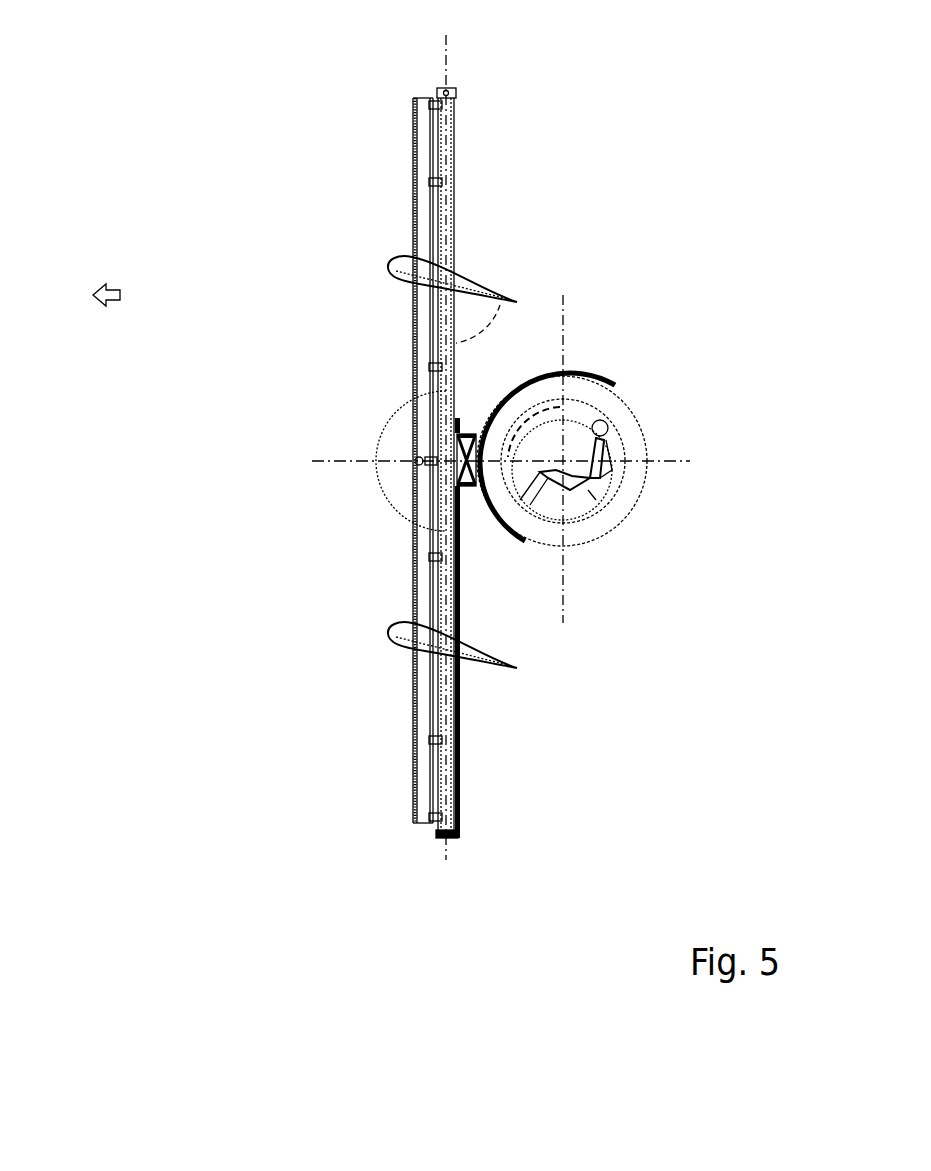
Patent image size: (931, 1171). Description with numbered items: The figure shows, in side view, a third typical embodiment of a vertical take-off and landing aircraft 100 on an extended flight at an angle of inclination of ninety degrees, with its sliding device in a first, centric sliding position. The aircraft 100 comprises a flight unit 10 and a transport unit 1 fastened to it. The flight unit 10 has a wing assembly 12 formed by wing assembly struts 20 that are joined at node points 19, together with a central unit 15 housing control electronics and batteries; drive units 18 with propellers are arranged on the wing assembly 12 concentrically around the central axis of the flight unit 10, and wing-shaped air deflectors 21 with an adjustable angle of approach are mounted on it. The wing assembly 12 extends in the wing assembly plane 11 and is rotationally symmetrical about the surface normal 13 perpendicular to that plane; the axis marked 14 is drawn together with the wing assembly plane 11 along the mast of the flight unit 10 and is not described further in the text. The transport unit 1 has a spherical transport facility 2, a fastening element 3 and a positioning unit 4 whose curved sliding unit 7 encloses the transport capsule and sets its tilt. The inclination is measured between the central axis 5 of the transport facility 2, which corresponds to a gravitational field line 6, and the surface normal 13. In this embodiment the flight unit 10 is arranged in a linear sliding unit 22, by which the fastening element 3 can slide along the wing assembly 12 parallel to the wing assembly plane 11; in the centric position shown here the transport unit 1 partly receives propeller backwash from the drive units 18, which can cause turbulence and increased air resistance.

The transport unit 1 is at (619, 489).
The transport facility 2 is at (627, 515).
The fastening element 3 is at (484, 518).
The positioning unit 4 is at (462, 488).
The central axis 5 is at (618, 494).
The gravitational field line 6 is at (567, 615).
The curved sliding unit 7 is at (577, 366).
The flight unit 10 is at (330, 648).
The wing assembly plane 11 is at (525, 442).
The rotation axis of mast 14 is at (445, 62).
The wing assembly 12 is at (498, 468).
The wing assembly struts 20 is at (454, 145).
The surface normal 13 is at (351, 463).
The central unit 15 is at (392, 420).
The drive units 18 is at (417, 180).
The node points 19 is at (454, 96).
The air deflectors 21 is at (400, 259).
The linear sliding unit 22 is at (458, 770).
The aircraft 100 is at (218, 111).